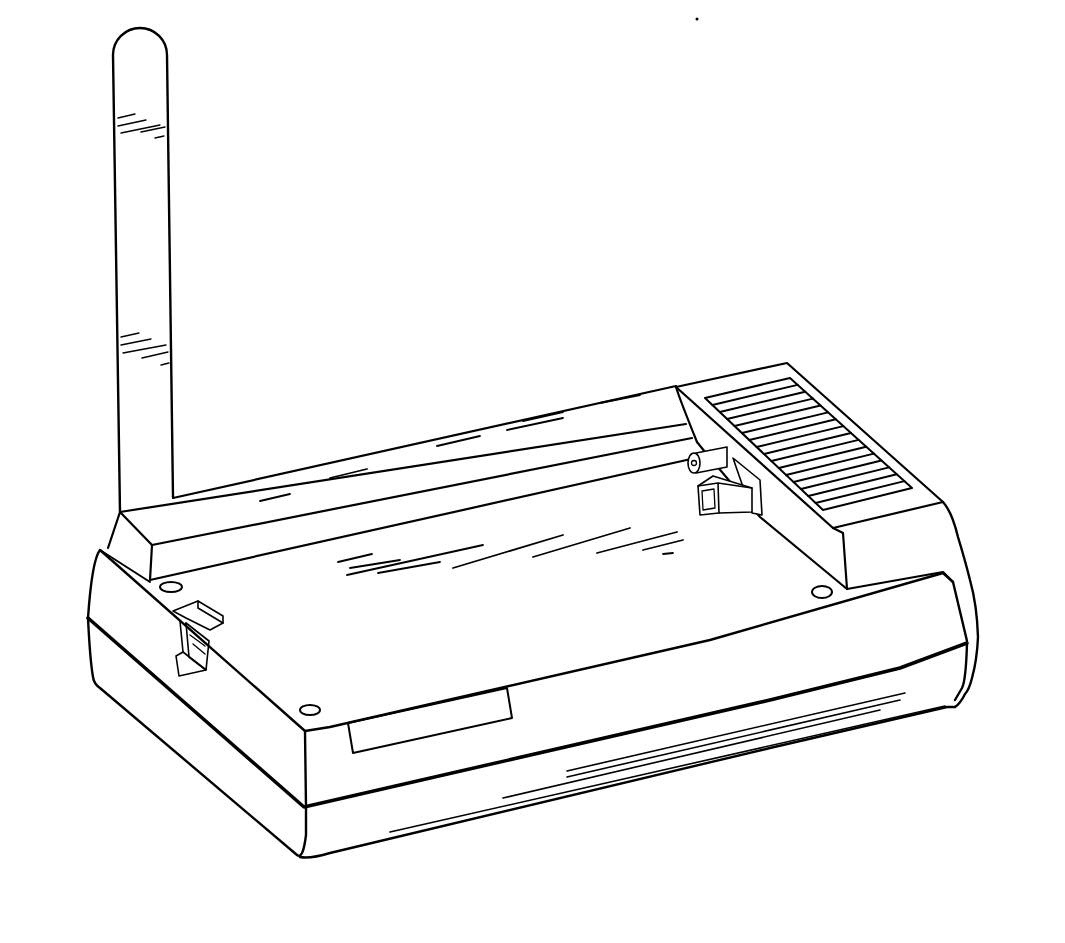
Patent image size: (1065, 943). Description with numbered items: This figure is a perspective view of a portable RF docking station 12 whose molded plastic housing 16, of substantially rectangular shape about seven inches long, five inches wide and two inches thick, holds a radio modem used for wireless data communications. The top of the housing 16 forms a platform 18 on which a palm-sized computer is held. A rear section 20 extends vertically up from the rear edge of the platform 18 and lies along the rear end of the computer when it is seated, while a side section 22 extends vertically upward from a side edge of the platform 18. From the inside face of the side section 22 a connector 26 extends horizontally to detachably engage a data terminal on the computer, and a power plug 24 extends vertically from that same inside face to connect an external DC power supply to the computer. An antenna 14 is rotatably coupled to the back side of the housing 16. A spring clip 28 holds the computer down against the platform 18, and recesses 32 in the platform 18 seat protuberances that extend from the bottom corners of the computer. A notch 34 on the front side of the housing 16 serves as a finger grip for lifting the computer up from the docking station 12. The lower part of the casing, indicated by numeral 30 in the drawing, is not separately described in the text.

The portable docking station 12 is at (698, 226).
The antenna 14 is at (153, 164).
The housing 16 is at (958, 531).
The platform 18 is at (655, 623).
The rear section 20 is at (443, 493).
The side section 22 is at (776, 392).
The power plug 24 is at (689, 466).
The connector 26 is at (742, 519).
The spring clip 28 is at (216, 610).
The lower housing 30 is at (172, 720).
The recesses 32 is at (182, 587).
The notch 34 is at (440, 714).